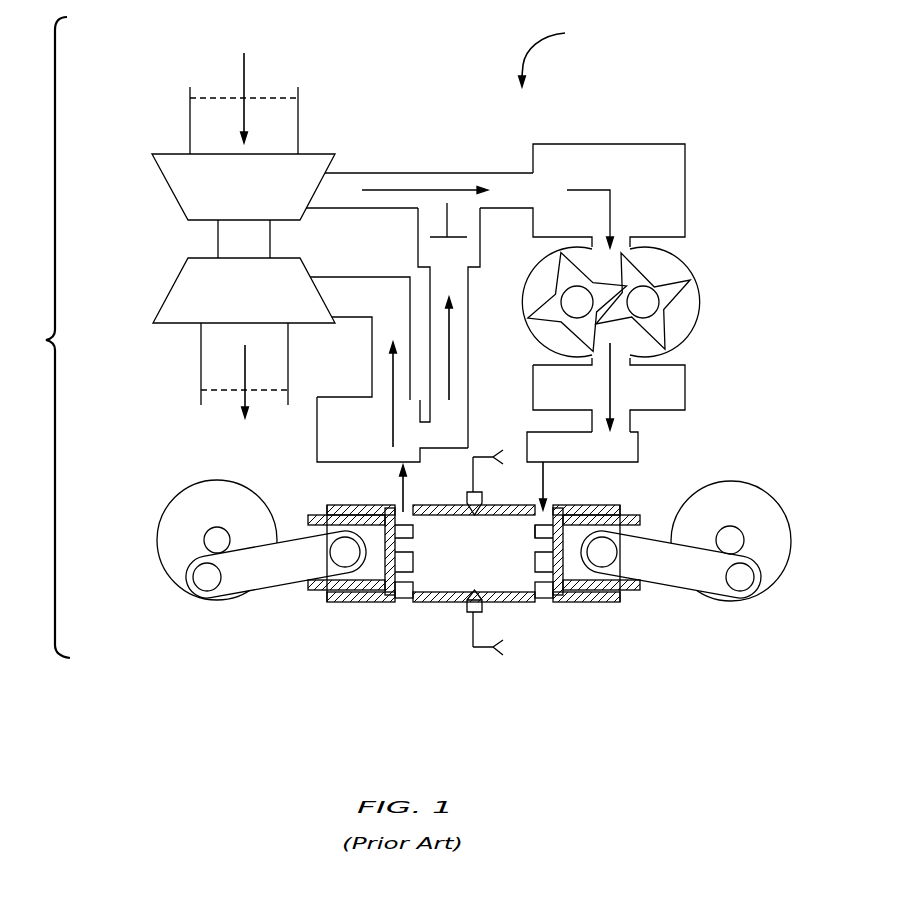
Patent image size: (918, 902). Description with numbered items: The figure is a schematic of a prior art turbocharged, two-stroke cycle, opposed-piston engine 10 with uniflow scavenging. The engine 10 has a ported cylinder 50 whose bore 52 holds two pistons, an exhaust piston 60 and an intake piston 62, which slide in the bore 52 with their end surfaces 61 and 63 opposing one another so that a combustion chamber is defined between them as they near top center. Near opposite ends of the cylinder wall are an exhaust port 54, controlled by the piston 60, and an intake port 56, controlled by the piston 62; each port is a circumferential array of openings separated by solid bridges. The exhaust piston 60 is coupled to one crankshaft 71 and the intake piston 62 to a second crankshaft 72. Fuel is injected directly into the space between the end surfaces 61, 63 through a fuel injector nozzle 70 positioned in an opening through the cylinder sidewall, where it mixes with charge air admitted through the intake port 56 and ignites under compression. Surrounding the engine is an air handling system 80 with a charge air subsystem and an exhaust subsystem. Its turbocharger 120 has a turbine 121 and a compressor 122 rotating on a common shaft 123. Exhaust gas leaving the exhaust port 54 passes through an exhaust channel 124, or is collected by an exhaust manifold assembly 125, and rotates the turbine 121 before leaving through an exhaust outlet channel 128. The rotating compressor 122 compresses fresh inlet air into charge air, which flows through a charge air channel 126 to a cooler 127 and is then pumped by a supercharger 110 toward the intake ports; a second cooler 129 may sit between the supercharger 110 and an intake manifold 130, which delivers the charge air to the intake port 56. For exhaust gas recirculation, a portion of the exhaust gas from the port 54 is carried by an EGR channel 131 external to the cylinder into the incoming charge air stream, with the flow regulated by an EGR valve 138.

The opposed-piston engine 10 is at (42, 337).
The ported cylinder 50 is at (458, 561).
The bore 52 is at (485, 564).
The exhaust port 54 is at (403, 600).
The intake port 56 is at (545, 600).
The exhaust piston 60 is at (310, 595).
The end surface 61 is at (393, 537).
The intake piston 62 is at (632, 512).
The end surface 63 is at (553, 537).
The fuel injector nozzle 70 is at (482, 500).
The crankshaft 71 is at (163, 500).
The crankshaft 72 is at (757, 483).
The air handling system 80 is at (556, 56).
The supercharger 110 is at (680, 262).
The turbocharger 120 is at (217, 173).
The turbine 121 is at (166, 300).
The compressor 122 is at (169, 185).
The common shaft 123 is at (270, 238).
The exhaust channel 124 is at (372, 327).
The exhaust manifold assembly 125 is at (315, 453).
The charge air channel 126 is at (407, 172).
The cooler 127 is at (685, 202).
The exhaust outlet channel 128 is at (201, 380).
The second cooler 129 is at (685, 383).
The intake manifold 130 is at (638, 450).
The EGR channel 131 is at (490, 328).
The EGR valve 138 is at (448, 217).